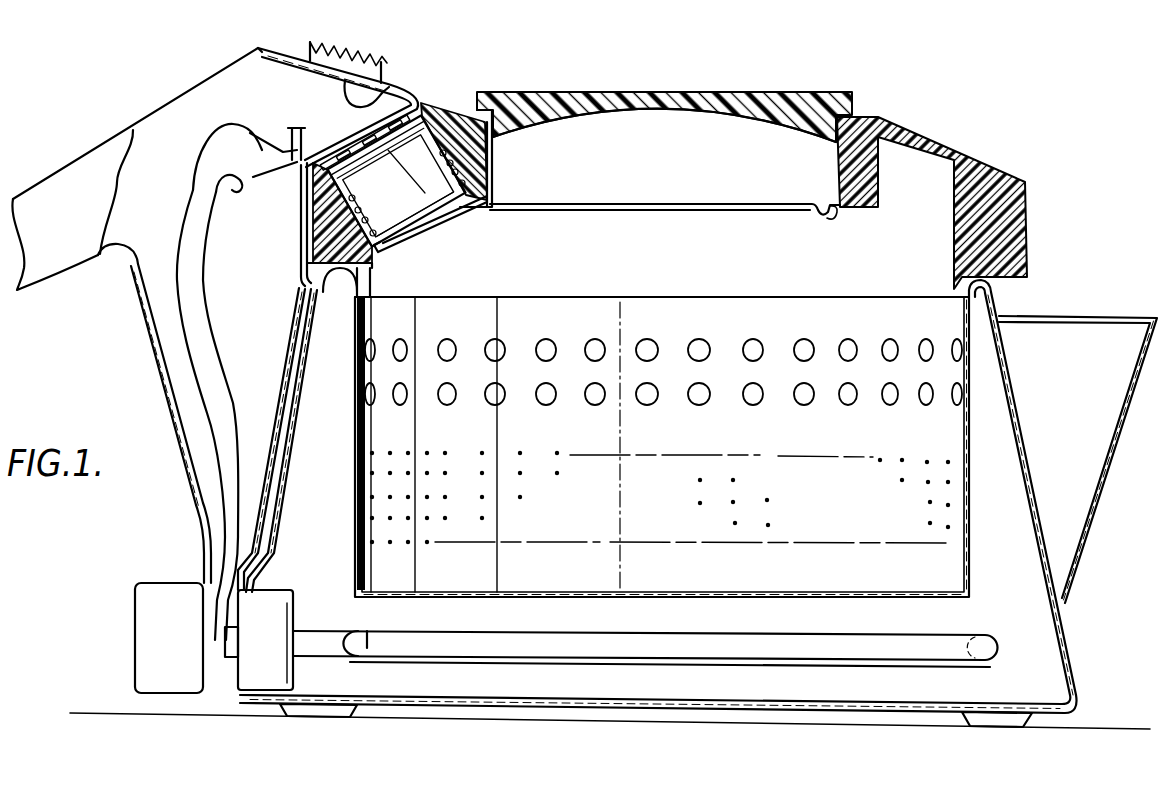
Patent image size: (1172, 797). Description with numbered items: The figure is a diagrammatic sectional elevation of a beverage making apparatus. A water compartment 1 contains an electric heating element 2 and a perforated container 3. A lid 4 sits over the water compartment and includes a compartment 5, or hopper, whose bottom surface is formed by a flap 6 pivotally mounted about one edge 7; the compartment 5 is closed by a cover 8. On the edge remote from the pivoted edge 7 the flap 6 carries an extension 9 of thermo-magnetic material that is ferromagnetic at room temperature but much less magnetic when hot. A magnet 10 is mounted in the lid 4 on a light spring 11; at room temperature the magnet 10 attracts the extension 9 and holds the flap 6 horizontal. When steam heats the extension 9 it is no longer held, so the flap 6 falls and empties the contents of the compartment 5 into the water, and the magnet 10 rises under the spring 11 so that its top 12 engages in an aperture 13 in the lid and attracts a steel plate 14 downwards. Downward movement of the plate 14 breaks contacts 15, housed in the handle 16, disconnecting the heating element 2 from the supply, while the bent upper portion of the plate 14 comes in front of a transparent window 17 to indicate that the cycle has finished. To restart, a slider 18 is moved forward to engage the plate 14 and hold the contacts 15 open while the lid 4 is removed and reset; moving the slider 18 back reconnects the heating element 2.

The water compartment 1 is at (1012, 493).
The electric heating element 2 is at (992, 635).
The perforated container 3 is at (966, 520).
The lid 4 is at (970, 152).
The compartment 5 is at (650, 150).
The flap 6 is at (717, 203).
The edge 7 is at (827, 215).
The cover 8 is at (575, 97).
The extension 9 is at (435, 223).
The magnet 10 is at (440, 158).
The light spring 11 is at (340, 226).
The top 12 is at (400, 133).
The aperture 13 is at (348, 152).
The steel plate 14 is at (403, 85).
The contacts 15 is at (302, 127).
The handle 16 is at (183, 98).
The transparent window 17 is at (405, 92).
The slider 18 is at (345, 55).